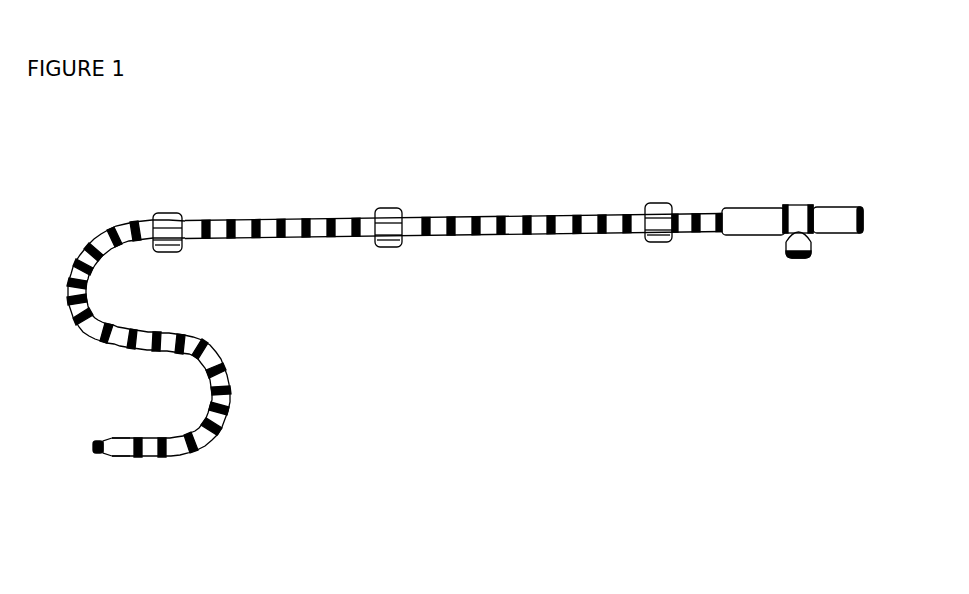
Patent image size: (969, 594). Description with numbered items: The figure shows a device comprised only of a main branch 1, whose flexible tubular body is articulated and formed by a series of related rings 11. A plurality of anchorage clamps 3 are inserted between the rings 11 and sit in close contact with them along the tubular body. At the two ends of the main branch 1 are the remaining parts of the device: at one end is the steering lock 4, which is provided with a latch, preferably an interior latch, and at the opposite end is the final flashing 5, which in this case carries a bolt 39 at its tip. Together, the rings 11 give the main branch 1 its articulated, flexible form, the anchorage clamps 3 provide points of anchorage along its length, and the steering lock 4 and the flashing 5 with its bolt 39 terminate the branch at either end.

The main branch 1 is at (227, 358).
The rings 11 is at (545, 220).
The anchorage clamps 3 is at (168, 221).
The steering lock 4 is at (752, 213).
The flashing 5 is at (123, 442).
The bolt 39 is at (96, 442).